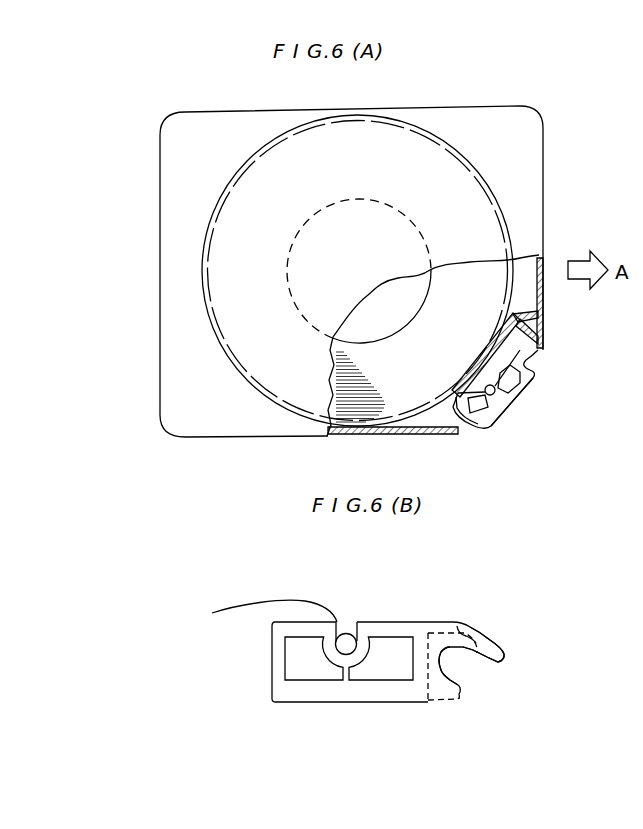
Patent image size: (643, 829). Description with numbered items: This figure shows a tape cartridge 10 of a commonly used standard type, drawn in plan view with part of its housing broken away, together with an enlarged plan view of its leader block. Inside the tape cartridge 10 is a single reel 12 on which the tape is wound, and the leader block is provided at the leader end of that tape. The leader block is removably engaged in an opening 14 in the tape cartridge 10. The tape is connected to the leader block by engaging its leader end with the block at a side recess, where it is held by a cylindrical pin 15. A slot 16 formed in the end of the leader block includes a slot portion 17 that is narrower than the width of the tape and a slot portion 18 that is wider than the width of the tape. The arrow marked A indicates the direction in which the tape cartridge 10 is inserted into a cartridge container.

The tape cartridge 10 is at (532, 155).
The single reel 12 is at (392, 227).
The opening 14 is at (518, 403).
The cylindrical pin 15 is at (348, 646).
The slot 16 is at (472, 663).
The slot portion 17 is at (466, 680).
The slot portion 18 is at (470, 637).